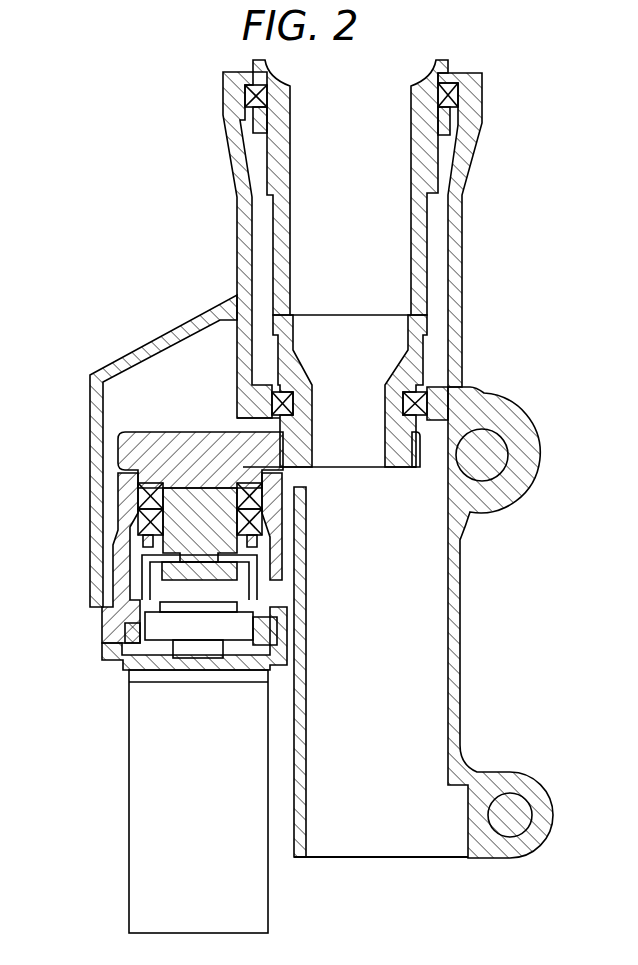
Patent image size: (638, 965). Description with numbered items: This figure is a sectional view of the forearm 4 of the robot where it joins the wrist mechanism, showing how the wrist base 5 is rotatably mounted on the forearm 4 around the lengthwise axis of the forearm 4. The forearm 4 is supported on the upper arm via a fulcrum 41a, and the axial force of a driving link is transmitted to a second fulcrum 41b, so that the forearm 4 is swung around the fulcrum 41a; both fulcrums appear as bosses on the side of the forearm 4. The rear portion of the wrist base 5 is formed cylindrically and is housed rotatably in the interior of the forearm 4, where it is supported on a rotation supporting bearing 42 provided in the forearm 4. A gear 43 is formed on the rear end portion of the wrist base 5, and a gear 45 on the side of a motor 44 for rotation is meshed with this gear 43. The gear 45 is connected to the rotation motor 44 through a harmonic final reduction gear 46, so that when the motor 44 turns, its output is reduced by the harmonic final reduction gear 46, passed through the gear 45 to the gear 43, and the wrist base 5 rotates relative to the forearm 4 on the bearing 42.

The forearm 4 is at (464, 232).
The wrist base 5 is at (410, 205).
The fulcrum 41a is at (488, 452).
The fulcrum 41b is at (513, 822).
The rotation supporting bearing 42 is at (462, 99).
The gear 43 is at (418, 462).
The motor 44 is at (160, 766).
The gear 45 is at (187, 447).
The harmonic final reduction gear 46 is at (101, 648).